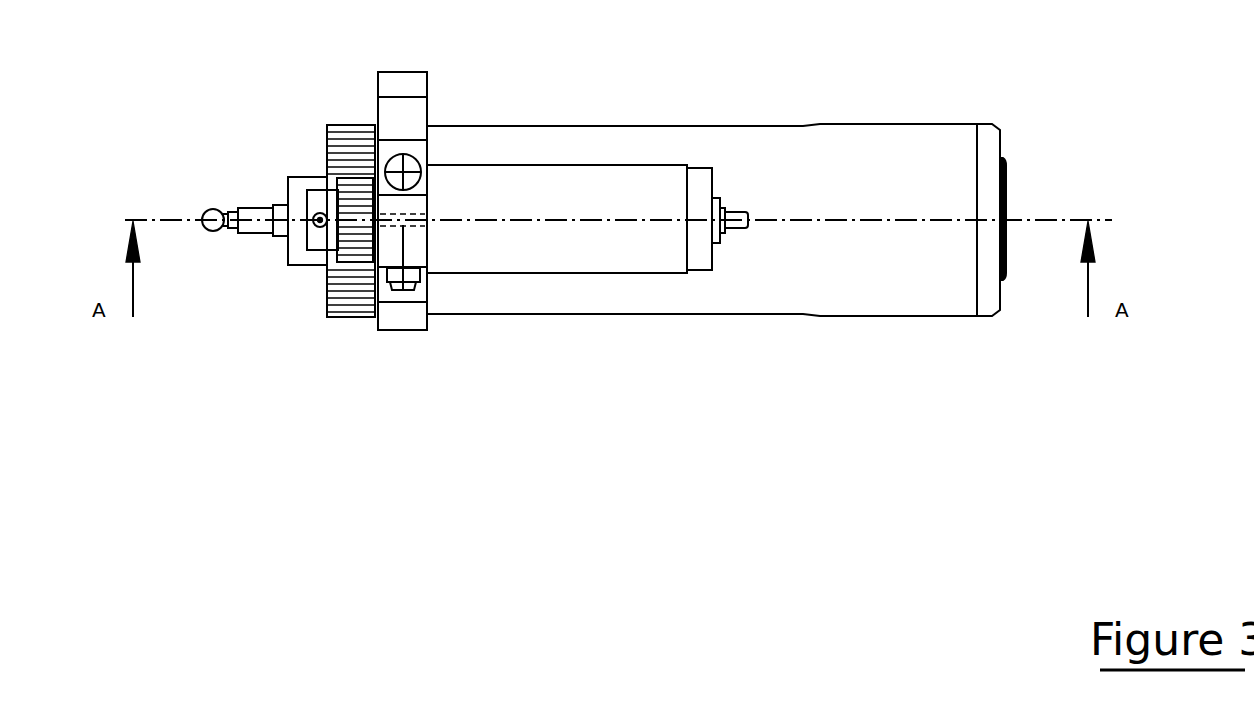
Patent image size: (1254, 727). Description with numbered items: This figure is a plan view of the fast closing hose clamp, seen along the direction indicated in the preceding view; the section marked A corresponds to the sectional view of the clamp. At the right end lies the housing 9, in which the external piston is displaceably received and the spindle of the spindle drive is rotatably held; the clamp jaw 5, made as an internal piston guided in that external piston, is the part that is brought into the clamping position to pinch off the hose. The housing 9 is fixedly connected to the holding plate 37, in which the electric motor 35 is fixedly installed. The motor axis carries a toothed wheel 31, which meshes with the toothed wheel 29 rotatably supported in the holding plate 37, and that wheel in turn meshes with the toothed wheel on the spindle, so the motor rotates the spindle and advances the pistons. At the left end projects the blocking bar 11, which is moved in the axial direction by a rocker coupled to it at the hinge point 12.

The clamp jaw 5 is at (1007, 187).
The housing 9 is at (835, 160).
The blocking bar 11 is at (263, 203).
The hinge point 12 is at (215, 232).
The toothed wheel 29 is at (327, 132).
The toothed wheel 31 is at (330, 240).
The electric motor 35 is at (575, 188).
The holding plate 37 is at (413, 85).